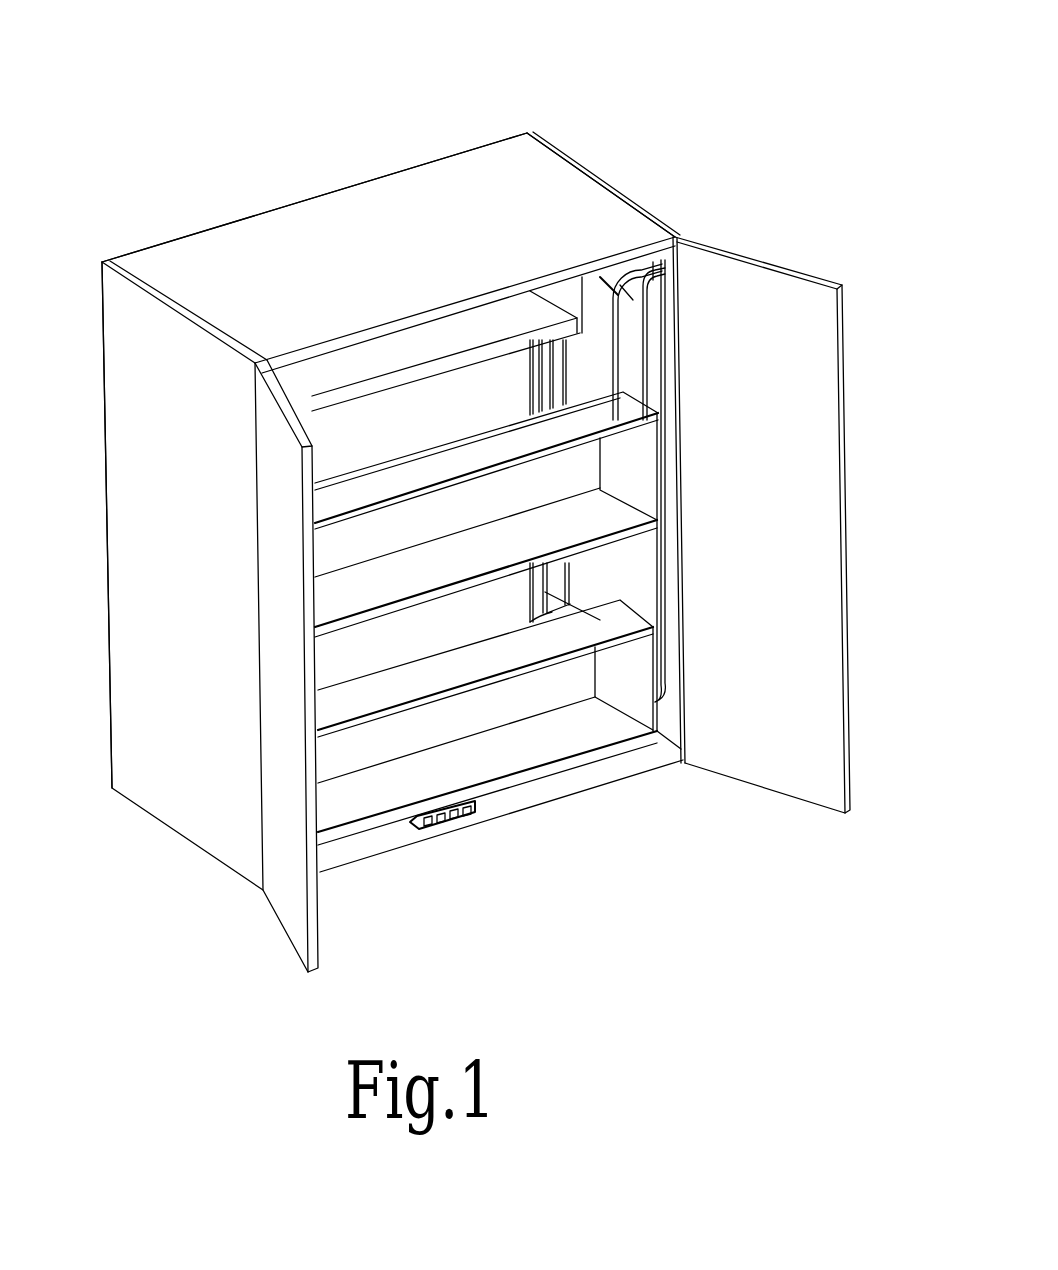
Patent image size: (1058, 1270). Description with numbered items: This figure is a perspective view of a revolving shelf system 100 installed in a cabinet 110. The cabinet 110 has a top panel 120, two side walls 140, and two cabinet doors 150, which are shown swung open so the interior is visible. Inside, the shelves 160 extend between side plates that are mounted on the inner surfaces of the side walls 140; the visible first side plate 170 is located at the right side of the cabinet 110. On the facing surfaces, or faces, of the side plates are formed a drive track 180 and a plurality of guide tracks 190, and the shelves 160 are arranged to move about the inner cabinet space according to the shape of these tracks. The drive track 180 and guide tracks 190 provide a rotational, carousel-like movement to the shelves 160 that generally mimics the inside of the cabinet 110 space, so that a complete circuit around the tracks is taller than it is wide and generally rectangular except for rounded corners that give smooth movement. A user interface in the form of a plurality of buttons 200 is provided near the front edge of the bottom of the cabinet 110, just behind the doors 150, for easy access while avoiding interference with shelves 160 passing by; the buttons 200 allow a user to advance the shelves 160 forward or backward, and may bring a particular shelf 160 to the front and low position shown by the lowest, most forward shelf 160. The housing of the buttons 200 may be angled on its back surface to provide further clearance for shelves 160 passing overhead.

The shelf system 100 is at (638, 855).
The cabinet 110 is at (532, 131).
The top panel 120 is at (283, 277).
The side walls 140 is at (188, 468).
The cabinet doors 150 is at (813, 313).
The shelves 160 is at (660, 712).
The first side plate 170 is at (650, 282).
The drive track 180 is at (632, 343).
The guide tracks 190 is at (643, 370).
The buttons 200 is at (437, 828).